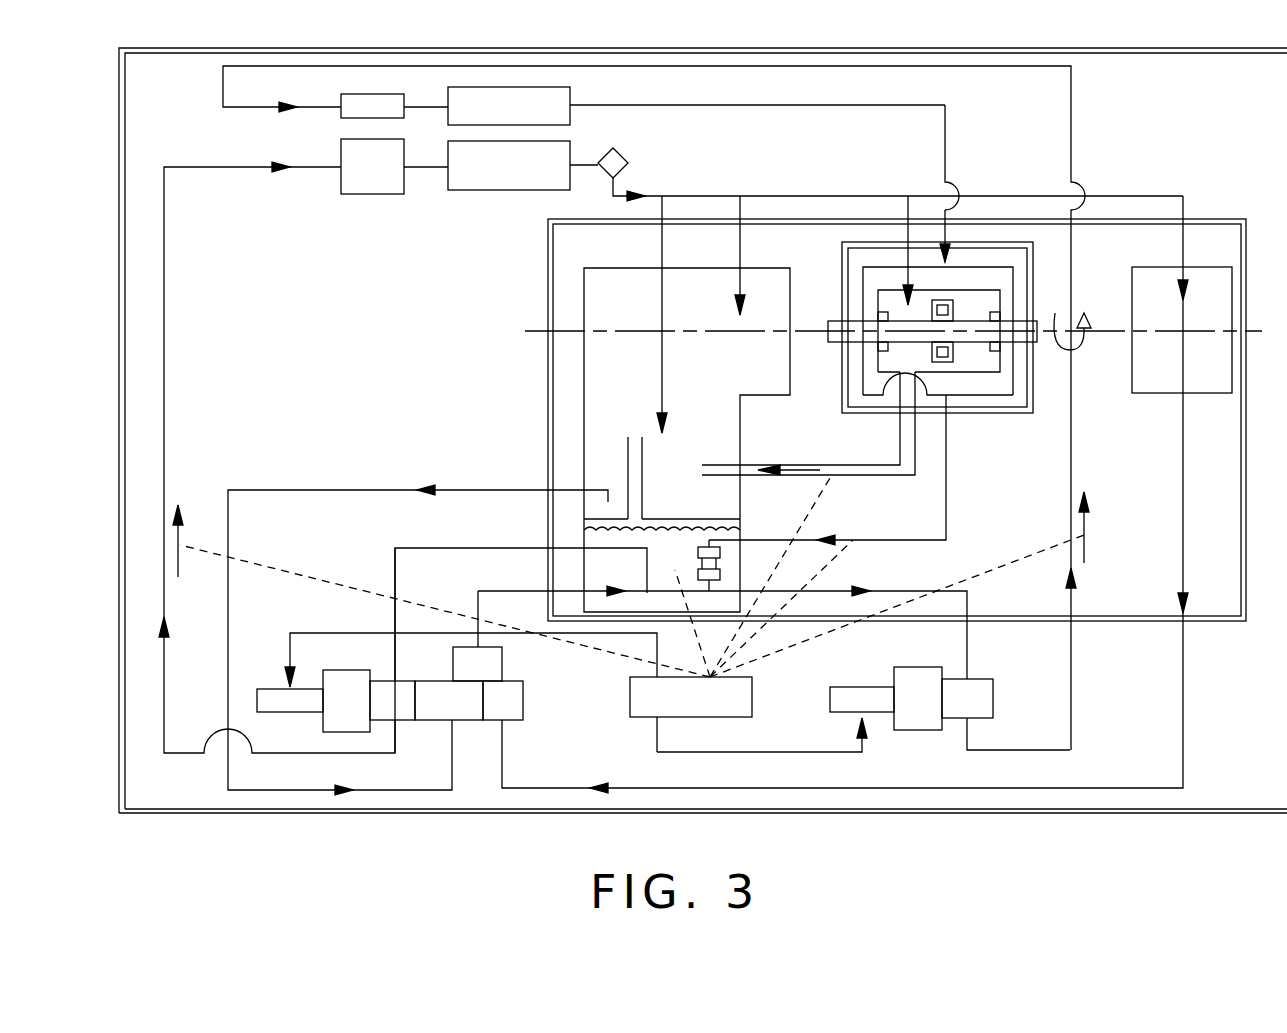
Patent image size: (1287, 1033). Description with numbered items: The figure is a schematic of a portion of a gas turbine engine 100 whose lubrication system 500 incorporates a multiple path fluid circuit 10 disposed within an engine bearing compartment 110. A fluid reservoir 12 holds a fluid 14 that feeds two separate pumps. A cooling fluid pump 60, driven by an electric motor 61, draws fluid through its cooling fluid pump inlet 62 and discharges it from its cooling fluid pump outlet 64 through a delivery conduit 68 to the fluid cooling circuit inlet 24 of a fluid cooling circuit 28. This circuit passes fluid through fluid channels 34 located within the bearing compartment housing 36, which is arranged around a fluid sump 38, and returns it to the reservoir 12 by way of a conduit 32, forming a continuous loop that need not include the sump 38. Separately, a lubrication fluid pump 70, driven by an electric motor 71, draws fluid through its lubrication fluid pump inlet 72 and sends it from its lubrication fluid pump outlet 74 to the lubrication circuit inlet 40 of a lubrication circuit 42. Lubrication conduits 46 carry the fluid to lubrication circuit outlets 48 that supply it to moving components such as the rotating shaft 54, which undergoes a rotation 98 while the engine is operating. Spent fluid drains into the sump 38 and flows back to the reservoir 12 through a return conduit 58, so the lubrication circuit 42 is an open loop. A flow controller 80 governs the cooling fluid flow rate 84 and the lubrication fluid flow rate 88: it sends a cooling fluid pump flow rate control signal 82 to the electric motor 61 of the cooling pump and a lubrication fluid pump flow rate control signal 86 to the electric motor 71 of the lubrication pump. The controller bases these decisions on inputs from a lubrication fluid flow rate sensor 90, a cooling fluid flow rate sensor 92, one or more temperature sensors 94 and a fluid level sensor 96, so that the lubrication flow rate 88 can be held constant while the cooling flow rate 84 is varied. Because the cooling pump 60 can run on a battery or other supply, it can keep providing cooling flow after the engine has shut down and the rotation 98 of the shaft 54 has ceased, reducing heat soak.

The multiple path fluid circuit 10 is at (980, 168).
The fluid reservoir 12 is at (583, 540).
The fluid 14 is at (663, 547).
The fluid cooling circuit inlet 24 is at (947, 233).
The fluid cooling circuit 28 is at (752, 104).
The conduit 32 is at (946, 490).
The fluid channels 34 is at (1013, 280).
The bearing compartment housing 36 is at (995, 385).
The fluid sump 38 is at (893, 365).
The lubrication circuit inlet 40 is at (608, 180).
The lubrication circuit 42 is at (822, 195).
The lubrication conduits 46 is at (912, 235).
The lubrication circuit outlets 48 is at (905, 278).
The rotating shaft 54 is at (853, 343).
The return conduit 58 is at (712, 464).
The cooling fluid pump 60 is at (975, 697).
The electric motor 61 is at (925, 722).
The cooling fluid pump inlet 62 is at (967, 652).
The cooling fluid pump outlet 64 is at (967, 730).
The delivery conduit 68 is at (945, 135).
The lubrication fluid pump 70 is at (388, 692).
The electric motor 71 is at (335, 715).
The lubrication fluid pump inlet 72 is at (396, 662).
The lubrication fluid pump outlet 74 is at (397, 732).
The flow controller 80 is at (642, 712).
The cooling fluid pump flow rate control signal 82 is at (780, 752).
The cooling fluid flow rate 84 is at (1084, 528).
The lubrication fluid pump flow rate control signal 86 is at (340, 632).
The lubrication fluid flow rate 88 is at (178, 542).
The lubrication fluid flow rate sensor 90 is at (538, 640).
The cooling fluid flow rate sensor 92 is at (795, 637).
The temperature sensors 94 is at (808, 508).
The fluid level sensor 96 is at (695, 635).
The rotation 98 is at (1075, 345).
The gas turbine engine 100 is at (548, 300).
The engine bearing compartment 110 is at (968, 415).
The lubrication system 500 is at (125, 307).